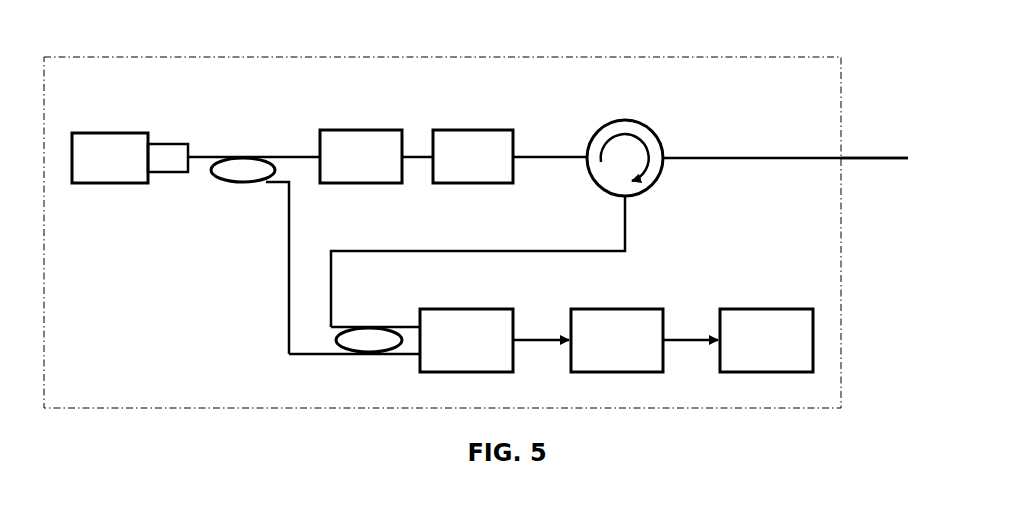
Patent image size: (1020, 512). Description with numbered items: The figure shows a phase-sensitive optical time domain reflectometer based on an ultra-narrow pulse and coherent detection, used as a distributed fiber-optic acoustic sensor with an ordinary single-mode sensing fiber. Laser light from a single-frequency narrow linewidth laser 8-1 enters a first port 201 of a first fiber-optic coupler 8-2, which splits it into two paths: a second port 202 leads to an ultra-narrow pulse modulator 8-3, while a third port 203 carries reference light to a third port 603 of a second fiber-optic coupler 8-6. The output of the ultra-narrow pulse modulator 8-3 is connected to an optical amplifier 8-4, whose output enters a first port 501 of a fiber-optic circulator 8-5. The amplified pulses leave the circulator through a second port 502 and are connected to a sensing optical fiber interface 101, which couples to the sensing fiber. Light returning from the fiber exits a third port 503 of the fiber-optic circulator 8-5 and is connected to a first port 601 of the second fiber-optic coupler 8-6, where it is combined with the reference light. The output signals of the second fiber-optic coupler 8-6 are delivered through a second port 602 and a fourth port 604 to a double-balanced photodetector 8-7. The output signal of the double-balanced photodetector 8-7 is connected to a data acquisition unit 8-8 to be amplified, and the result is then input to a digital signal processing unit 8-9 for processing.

The single-frequency narrow linewidth laser 8-1 is at (103, 133).
The first fiber-optic coupler 8-2 is at (240, 157).
The ultra-narrow pulse modulator 8-3 is at (355, 130).
The optical amplifier 8-4 is at (460, 130).
The fiber-optic circulator 8-5 is at (662, 140).
The second fiber-optic coupler 8-6 is at (367, 327).
The double-balanced photodetector 8-7 is at (513, 309).
The data acquisition unit 8-8 is at (607, 309).
The digital signal processing unit 8-9 is at (740, 309).
The sensing optical fiber interface 101 is at (868, 158).
The first port of the first fiber-optic coupler 201 is at (215, 144).
The second port of the first fiber-optic coupler 202 is at (281, 144).
The third port of the first fiber-optic coupler 203 is at (273, 268).
The first port of the fiber-optic circulator 501 is at (550, 147).
The second port of the fiber-optic circulator 502 is at (785, 149).
The third port of the fiber-optic circulator 503 is at (498, 261).
The first port of the second fiber-optic coupler 601 is at (350, 313).
The second port of the second fiber-optic coupler 602 is at (394, 318).
The third port of the second fiber-optic coupler 603 is at (329, 367).
The fourth port of the second fiber-optic coupler 604 is at (394, 367).